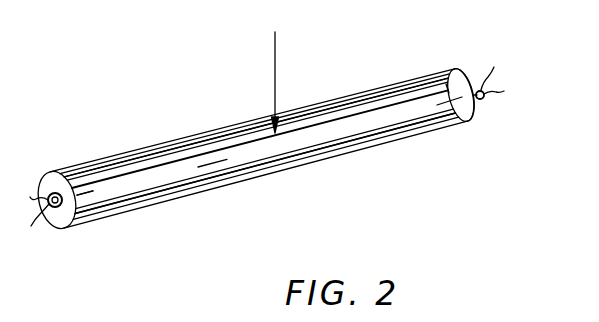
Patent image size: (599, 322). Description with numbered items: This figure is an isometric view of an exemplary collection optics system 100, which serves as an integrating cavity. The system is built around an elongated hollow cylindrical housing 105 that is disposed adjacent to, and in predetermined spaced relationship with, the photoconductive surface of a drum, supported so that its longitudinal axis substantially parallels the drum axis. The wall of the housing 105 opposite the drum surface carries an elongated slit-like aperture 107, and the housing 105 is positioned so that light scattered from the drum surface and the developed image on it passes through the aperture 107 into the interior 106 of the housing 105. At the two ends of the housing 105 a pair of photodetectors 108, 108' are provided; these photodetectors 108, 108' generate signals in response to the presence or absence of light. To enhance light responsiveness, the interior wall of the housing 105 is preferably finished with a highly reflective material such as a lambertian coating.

The collection optics system 100 is at (459, 54).
The elongated hollow cylindrical housing 105 is at (316, 152).
The interior 106 is at (156, 190).
The elongated slit-like aperture 107 is at (173, 155).
The photodetector 108 is at (64, 232).
The photodetector 108' is at (512, 100).